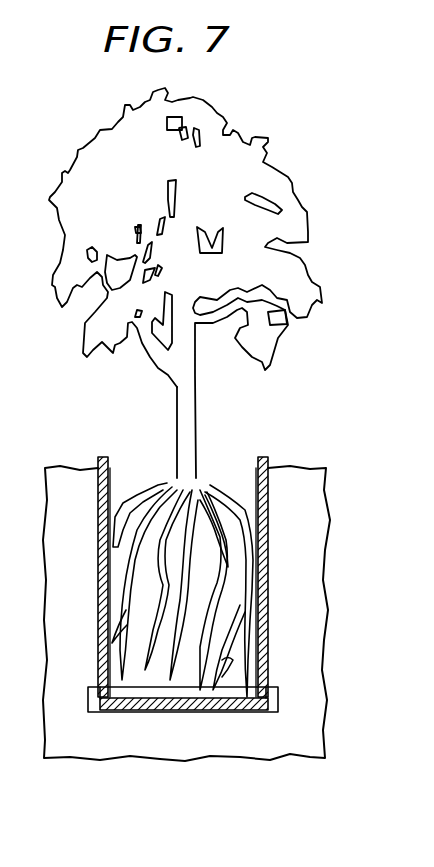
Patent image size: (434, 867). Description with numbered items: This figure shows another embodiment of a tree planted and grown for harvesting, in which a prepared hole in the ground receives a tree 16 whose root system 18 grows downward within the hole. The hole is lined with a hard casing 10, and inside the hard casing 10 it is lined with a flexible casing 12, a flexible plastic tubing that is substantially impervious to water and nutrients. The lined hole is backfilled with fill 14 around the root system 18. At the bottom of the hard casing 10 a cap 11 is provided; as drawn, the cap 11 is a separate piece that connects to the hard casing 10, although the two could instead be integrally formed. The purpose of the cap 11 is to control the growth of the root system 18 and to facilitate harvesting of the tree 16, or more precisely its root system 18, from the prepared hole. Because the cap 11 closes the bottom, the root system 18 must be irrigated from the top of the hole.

The hard casing 10 is at (98, 462).
The cap 11 is at (175, 712).
The flexible casing 12 is at (112, 470).
The fill 14 is at (237, 478).
The tree 16 is at (197, 403).
The root system 18 is at (245, 566).